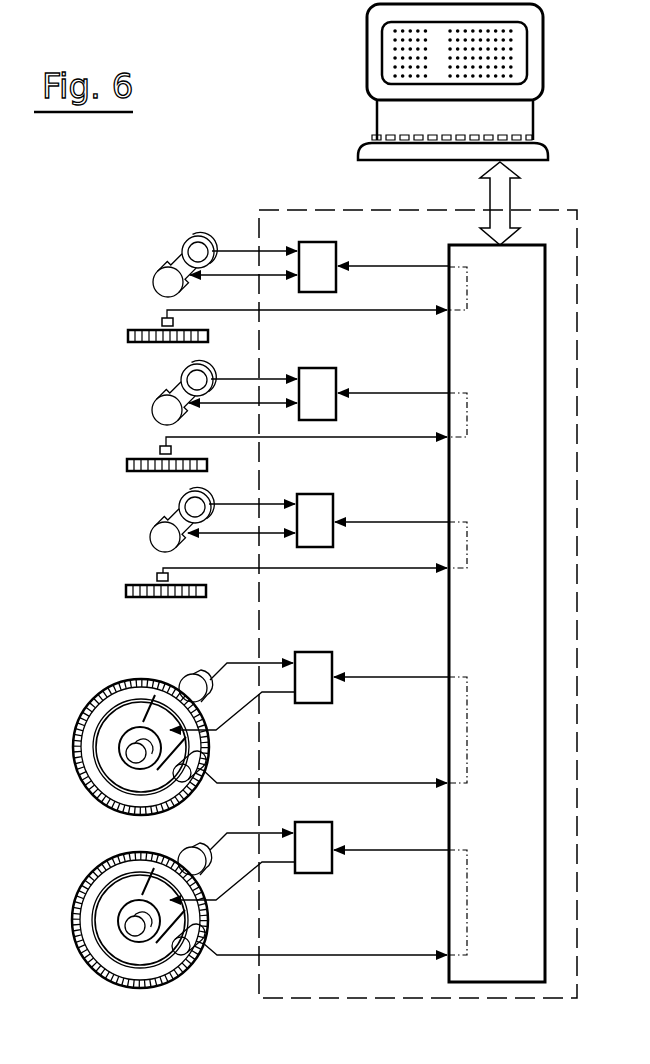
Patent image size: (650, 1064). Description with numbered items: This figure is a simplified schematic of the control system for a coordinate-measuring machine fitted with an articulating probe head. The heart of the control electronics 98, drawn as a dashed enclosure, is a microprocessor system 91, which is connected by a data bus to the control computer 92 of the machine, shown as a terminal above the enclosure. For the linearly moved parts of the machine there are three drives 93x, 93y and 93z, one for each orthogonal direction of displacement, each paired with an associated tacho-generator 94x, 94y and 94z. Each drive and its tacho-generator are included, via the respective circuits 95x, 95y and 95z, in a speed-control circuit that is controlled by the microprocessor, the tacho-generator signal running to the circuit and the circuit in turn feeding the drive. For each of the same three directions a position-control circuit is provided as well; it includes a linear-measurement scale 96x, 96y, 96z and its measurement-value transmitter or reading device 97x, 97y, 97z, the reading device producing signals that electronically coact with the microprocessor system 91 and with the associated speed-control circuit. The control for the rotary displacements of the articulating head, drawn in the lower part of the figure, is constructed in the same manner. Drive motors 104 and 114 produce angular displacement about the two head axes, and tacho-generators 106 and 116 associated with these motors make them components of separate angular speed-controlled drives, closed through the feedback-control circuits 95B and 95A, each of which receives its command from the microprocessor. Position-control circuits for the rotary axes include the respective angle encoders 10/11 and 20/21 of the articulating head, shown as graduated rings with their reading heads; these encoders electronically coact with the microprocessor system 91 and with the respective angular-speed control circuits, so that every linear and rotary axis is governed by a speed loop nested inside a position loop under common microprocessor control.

The control computer 92 is at (536, 87).
The control electronics 98 is at (557, 210).
The microprocessor system 91 is at (523, 943).
The circuit 95x is at (332, 266).
The circuit 95y is at (330, 382).
The circuit 95z is at (329, 506).
The feedback-control circuit 95B is at (320, 668).
The feedback-control circuit 95A is at (320, 846).
The tacho-generator 94x is at (196, 237).
The drive 93x is at (156, 267).
The measurement-value transmitter or reading device 97x is at (160, 320).
The linear-measurement scale 96x is at (128, 335).
The tacho-generator 94y is at (182, 366).
The drive 93y is at (162, 408).
The measurement-value transmitter or reading device 97y is at (158, 450).
The linear-measurement scale 96y is at (130, 471).
The tacho-generator 94z is at (180, 500).
The drive 93z is at (160, 538).
The measurement-value transmitter or reading device 97z is at (155, 577).
The linear-measurement scale 96z is at (140, 596).
The angle encoder 10 is at (75, 745).
The drive motor 104 is at (142, 712).
The tacho-generator 106 is at (190, 676).
The angle encoder 11 is at (207, 747).
The angle encoder 20 is at (74, 912).
The drive motor 114 is at (140, 882).
The tacho-generator 116 is at (205, 852).
The angle encoder 21 is at (207, 920).